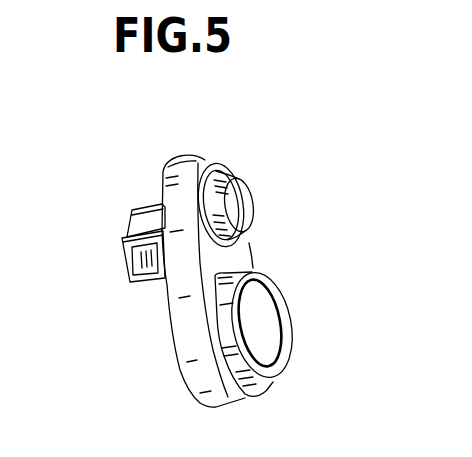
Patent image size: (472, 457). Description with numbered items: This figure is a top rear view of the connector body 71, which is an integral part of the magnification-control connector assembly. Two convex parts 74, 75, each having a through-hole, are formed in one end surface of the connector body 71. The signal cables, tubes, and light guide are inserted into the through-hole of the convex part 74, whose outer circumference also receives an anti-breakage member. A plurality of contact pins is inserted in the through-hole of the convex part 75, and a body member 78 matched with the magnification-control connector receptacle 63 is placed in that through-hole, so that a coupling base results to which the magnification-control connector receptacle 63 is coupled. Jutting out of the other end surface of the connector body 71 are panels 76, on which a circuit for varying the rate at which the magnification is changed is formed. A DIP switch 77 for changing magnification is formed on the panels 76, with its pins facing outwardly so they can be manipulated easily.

The magnification-control connector receptacle 63 is at (270, 199).
The connector body 71 is at (182, 175).
The convex part 74 is at (276, 376).
The convex part 75 is at (216, 165).
The panels 76 is at (125, 237).
The DIP switch 77 is at (139, 280).
The body member 78 is at (238, 170).